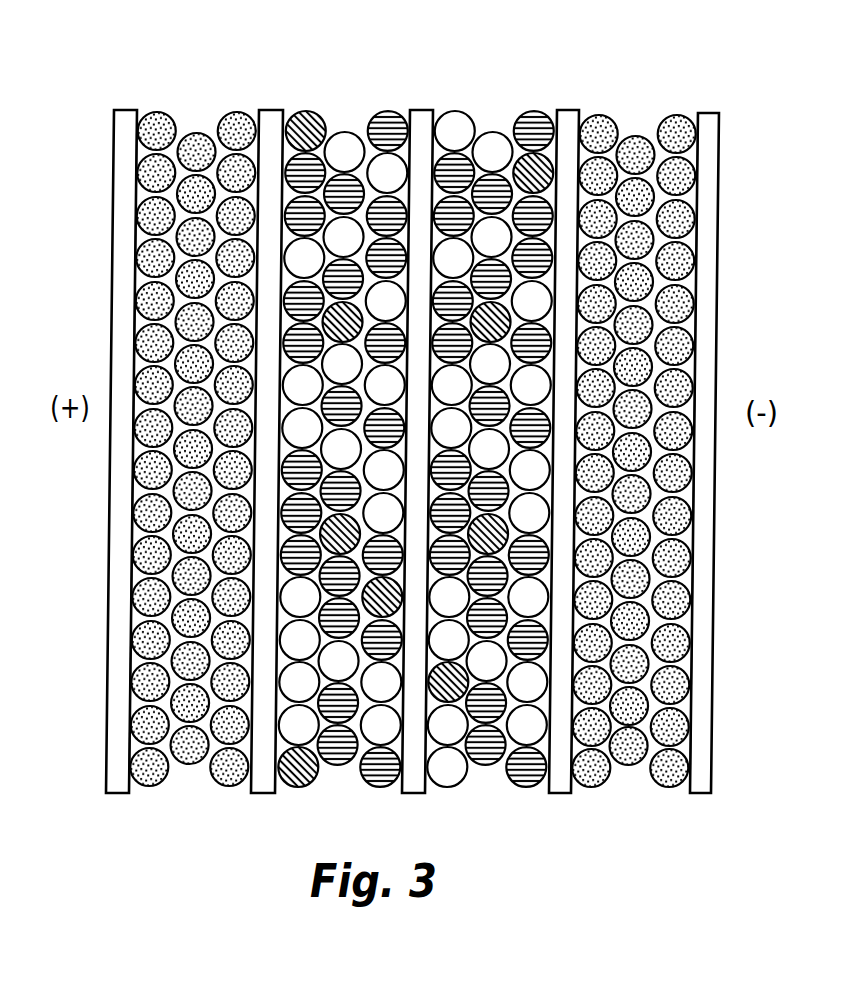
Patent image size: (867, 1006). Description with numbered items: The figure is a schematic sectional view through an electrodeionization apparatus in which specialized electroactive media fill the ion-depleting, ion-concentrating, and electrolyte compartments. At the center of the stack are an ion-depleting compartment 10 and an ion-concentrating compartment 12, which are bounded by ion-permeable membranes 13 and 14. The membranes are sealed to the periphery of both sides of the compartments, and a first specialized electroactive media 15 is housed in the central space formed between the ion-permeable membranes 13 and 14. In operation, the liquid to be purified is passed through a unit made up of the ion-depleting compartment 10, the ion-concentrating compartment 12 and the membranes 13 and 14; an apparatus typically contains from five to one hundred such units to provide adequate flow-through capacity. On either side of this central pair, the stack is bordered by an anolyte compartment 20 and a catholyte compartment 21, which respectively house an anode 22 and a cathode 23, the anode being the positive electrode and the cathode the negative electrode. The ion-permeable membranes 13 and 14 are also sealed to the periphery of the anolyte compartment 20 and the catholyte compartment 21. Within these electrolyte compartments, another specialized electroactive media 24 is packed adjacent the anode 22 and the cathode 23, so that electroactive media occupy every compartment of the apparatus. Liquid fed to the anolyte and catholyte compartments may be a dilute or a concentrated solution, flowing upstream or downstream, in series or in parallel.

The ion-depleting compartment 10 is at (307, 95).
The ion-concentrating compartment 12 is at (468, 100).
The ion-permeable membrane 13 is at (422, 109).
The ion-permeable membrane 14 is at (273, 109).
The first specialized electroactive media 15 is at (462, 152).
The anolyte compartment 20 is at (190, 114).
The catholyte compartment 21 is at (634, 114).
The anode 22 is at (120, 518).
The cathode 23 is at (717, 509).
The specialized electroactive media 24 is at (135, 188).